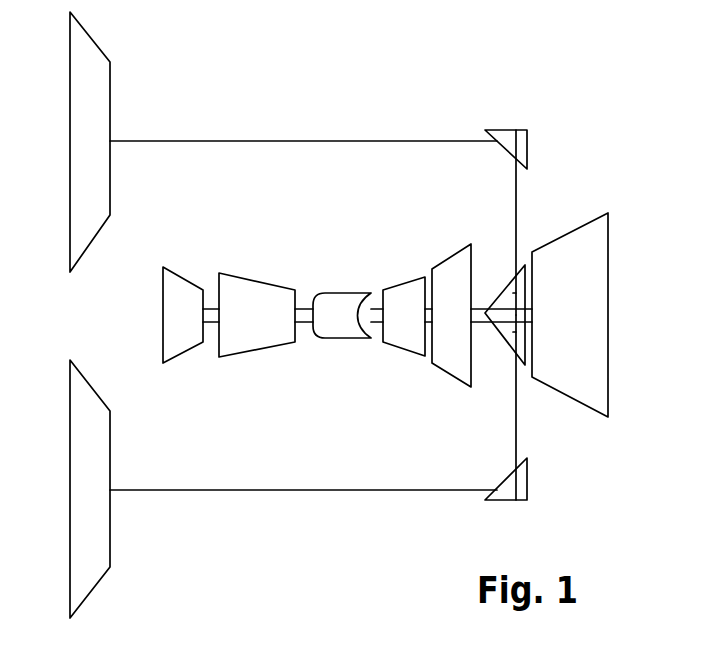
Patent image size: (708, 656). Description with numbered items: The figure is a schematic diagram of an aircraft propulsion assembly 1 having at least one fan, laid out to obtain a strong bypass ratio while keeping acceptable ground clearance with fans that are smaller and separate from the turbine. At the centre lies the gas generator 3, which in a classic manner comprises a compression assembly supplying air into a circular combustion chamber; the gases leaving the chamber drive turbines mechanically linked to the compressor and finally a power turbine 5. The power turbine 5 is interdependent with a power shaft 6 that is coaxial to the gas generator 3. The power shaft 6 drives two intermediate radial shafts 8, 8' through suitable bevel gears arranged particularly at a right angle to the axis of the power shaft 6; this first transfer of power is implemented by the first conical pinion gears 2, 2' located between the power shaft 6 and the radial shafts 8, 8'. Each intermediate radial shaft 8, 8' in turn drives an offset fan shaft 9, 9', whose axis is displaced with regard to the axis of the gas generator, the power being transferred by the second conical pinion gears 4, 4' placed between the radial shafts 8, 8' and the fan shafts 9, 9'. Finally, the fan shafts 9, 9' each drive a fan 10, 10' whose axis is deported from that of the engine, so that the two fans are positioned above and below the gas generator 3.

The propulsion assembly 1 is at (113, 297).
The first conical pinion gear 2 is at (588, 312).
The first conical pinion gear 2' is at (586, 361).
The gas generator 3 is at (323, 358).
The second conical pinion gear 4 is at (500, 113).
The second conical pinion gear 4' is at (538, 497).
The power turbine 5 is at (582, 259).
The power shaft 6 is at (486, 316).
The intermediate radial shaft 8 is at (558, 222).
The intermediate radial shaft 8' is at (555, 407).
The fan shaft 9 is at (303, 103).
The fan shaft 9' is at (303, 528).
The fan 10 is at (129, 142).
The fan 10' is at (141, 489).